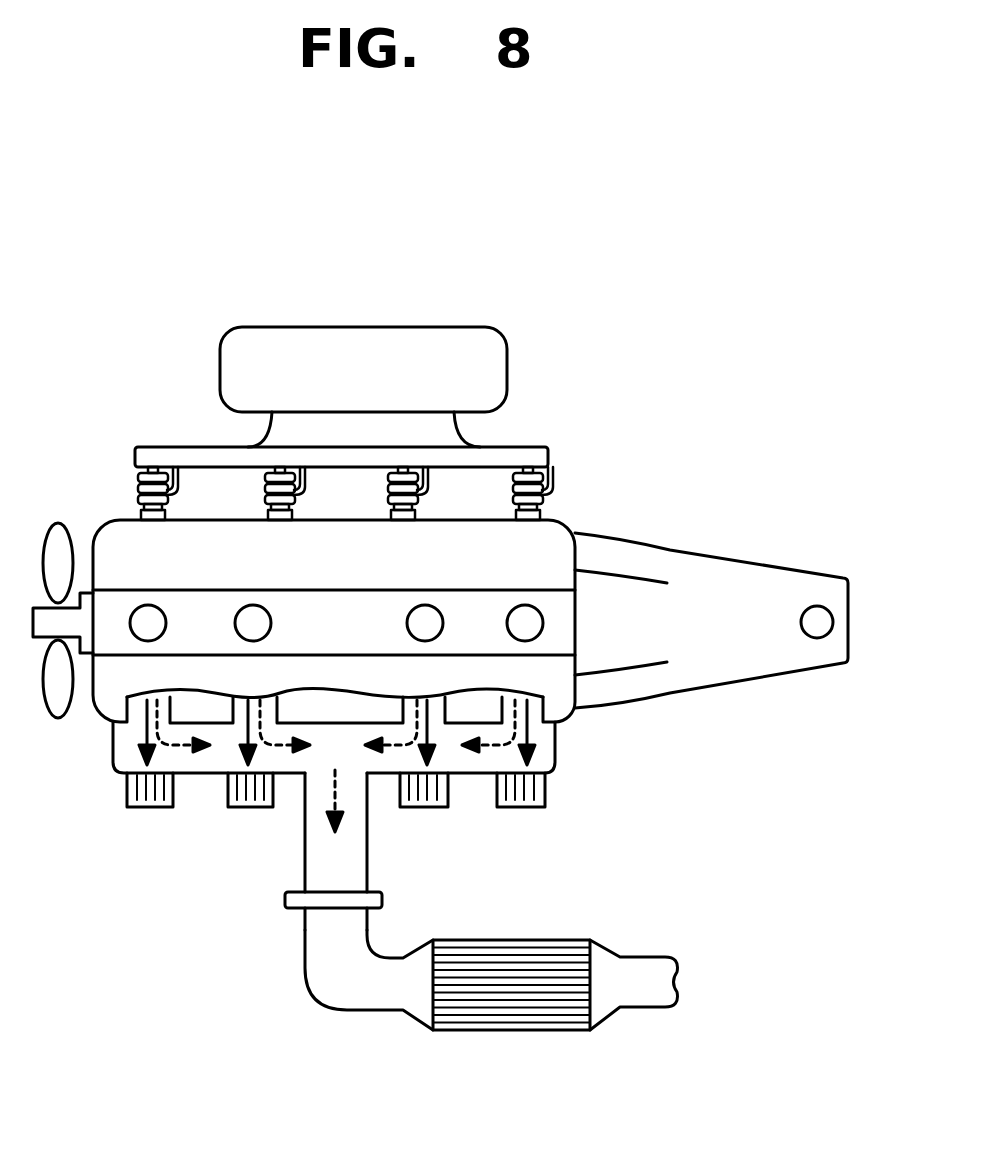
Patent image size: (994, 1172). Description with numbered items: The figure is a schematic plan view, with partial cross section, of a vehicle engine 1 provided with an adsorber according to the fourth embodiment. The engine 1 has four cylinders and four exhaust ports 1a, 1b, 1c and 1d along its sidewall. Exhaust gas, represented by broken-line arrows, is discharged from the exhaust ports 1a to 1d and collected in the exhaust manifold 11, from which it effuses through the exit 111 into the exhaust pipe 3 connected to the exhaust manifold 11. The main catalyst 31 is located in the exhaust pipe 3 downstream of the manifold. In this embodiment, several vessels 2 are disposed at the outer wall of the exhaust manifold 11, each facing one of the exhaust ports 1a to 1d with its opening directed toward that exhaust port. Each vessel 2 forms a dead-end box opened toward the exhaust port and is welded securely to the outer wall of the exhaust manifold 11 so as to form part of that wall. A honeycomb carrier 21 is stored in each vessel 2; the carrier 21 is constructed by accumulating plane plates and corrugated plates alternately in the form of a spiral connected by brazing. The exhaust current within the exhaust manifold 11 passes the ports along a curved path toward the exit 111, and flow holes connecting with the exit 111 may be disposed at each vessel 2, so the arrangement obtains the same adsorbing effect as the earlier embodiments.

The engine 1 is at (555, 520).
The exhaust port 1a is at (137, 723).
The exhaust port 1b is at (242, 710).
The exhaust port 1c is at (437, 707).
The exhaust port 1d is at (533, 705).
The vessel 2 is at (153, 807).
The carrier 21 is at (545, 785).
The exhaust manifold 11 is at (323, 778).
The exit 111 is at (337, 872).
The exhaust pipe 3 is at (377, 983).
The main catalyst 31 is at (517, 993).